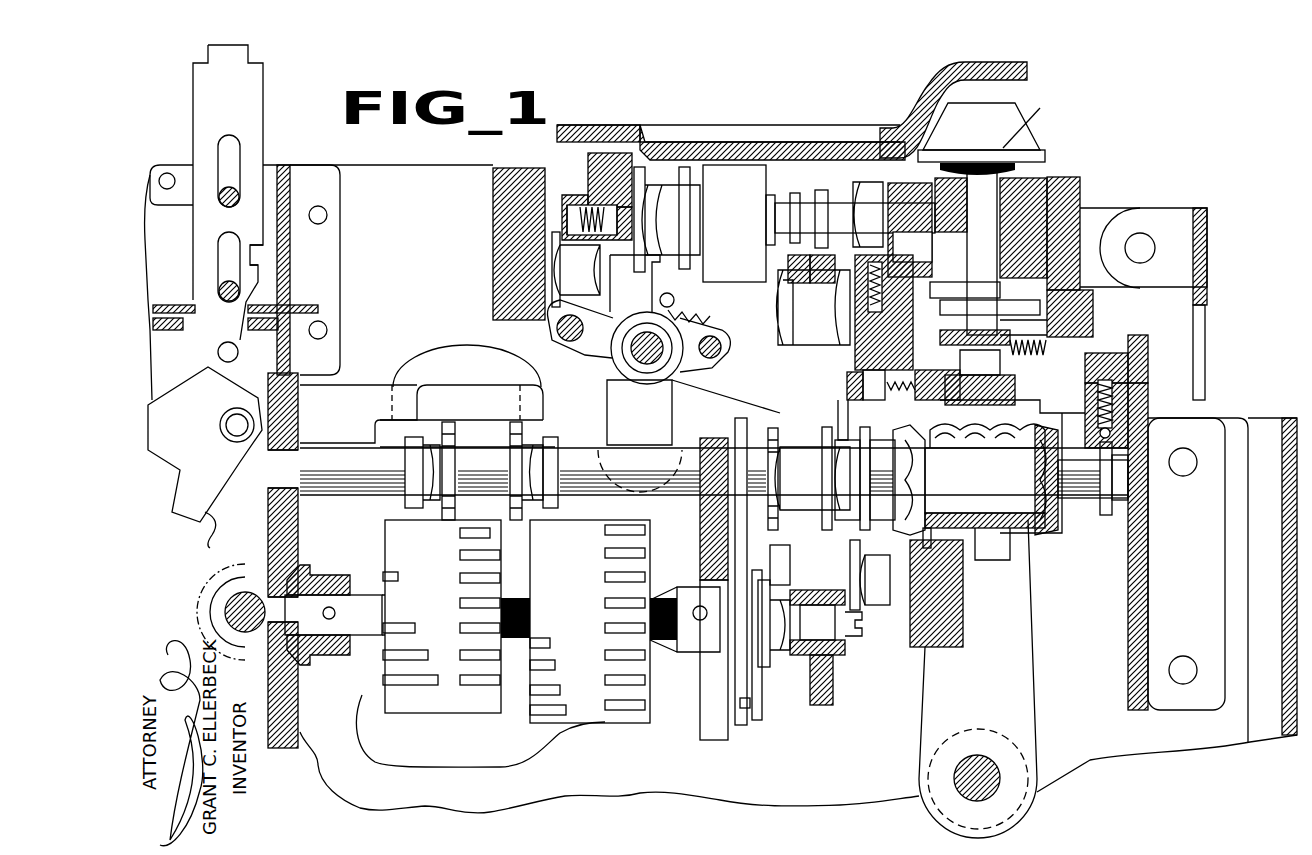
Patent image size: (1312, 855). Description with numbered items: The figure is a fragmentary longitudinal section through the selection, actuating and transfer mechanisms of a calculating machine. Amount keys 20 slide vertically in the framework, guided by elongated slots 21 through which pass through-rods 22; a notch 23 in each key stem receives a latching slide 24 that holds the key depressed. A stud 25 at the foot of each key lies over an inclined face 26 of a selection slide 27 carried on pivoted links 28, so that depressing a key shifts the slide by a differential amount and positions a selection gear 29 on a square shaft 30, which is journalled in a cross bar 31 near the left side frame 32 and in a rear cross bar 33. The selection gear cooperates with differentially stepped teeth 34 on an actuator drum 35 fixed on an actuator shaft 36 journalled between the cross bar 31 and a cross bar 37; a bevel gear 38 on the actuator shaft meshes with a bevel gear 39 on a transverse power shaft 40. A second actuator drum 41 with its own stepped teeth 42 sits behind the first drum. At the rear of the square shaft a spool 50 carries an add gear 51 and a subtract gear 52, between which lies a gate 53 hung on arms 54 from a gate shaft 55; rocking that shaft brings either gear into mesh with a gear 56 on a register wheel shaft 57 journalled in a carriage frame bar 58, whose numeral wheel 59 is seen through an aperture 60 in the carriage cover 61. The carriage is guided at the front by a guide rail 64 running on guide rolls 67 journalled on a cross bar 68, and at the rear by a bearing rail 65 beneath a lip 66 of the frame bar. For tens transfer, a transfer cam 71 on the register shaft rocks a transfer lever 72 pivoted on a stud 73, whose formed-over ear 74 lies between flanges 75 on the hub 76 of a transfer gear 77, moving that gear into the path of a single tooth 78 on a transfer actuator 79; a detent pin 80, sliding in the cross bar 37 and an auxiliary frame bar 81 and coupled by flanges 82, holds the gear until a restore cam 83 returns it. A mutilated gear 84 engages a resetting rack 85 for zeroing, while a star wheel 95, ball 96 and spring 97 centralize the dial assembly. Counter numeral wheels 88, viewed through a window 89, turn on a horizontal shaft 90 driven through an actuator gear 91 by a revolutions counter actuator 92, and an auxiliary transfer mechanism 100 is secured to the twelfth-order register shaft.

The amount key 20 is at (248, 103).
The elongated slot 21 is at (232, 150).
The through-rod 22 is at (226, 204).
The notch 23 is at (258, 250).
The latching slide 24 is at (295, 312).
The stud 25 is at (220, 352).
The inclined face 26 is at (283, 372).
The selection slide 27 is at (166, 440).
The pivoted link 28 is at (207, 525).
The selection gear 29 is at (448, 458).
The square shaft 30 is at (341, 485).
The cross bar 31 is at (298, 716).
The left side frame 32 is at (336, 755).
The cross bar 33 is at (1122, 603).
The differentially stepped teeth 34 is at (390, 602).
The actuator drum 35 is at (430, 708).
The actuator shaft 36 is at (358, 598).
The cross bar 37 is at (825, 698).
The bevel gear 38 is at (342, 652).
The bevel gear 39 is at (228, 562).
The transverse power shaft 40 is at (240, 612).
The second actuator drum 41 is at (590, 715).
The differentially stepped teeth 42 is at (545, 665).
The spool 50 is at (995, 490).
The add gear 51 is at (913, 495).
The subtract gear 52 is at (1045, 465).
The bail or gate 53 is at (965, 560).
The arm 54 is at (1020, 622).
The gate shaft 55 is at (1030, 775).
The gear 56 is at (965, 445).
The register wheel shaft 57 is at (1050, 305).
The carriage frame bar 58 is at (1070, 195).
The numeral wheel 59 is at (1035, 120).
The aperture 60 is at (918, 95).
The carriage cover 61 is at (790, 140).
The guide rail 64 is at (595, 175).
The bearing rail 65 is at (1082, 410).
The lip 66 is at (1145, 358).
The guide roll 67 is at (592, 282).
The cross bar 68 is at (505, 283).
The transfer cam 71 is at (1005, 408).
The transfer lever 72 is at (900, 420).
The stud 73 is at (845, 383).
The formed-over ear 74 is at (840, 418).
The flange 75 is at (858, 465).
The hub 76 is at (798, 468).
The transfer gear 77 is at (770, 470).
The tooth 78 is at (750, 702).
The transfer actuator 79 is at (745, 678).
The detent pin 80 is at (880, 560).
The auxiliary frame bar 81 is at (920, 630).
The flange 82 is at (855, 620).
The restore cam 83 is at (790, 548).
The mutilated gear 84 is at (975, 240).
The resetting rack 85 is at (1005, 220).
The numeral wheel 88 is at (745, 180).
The window 89 is at (718, 170).
The horizontal shaft 90 is at (800, 210).
The actuator gear 91 is at (667, 190).
The revolutions counter actuator 92 is at (672, 298).
The star wheel 95 is at (968, 345).
The ball 96 is at (990, 355).
The spring 97 is at (1120, 362).
The auxiliary transfer mechanism 100 is at (1090, 325).